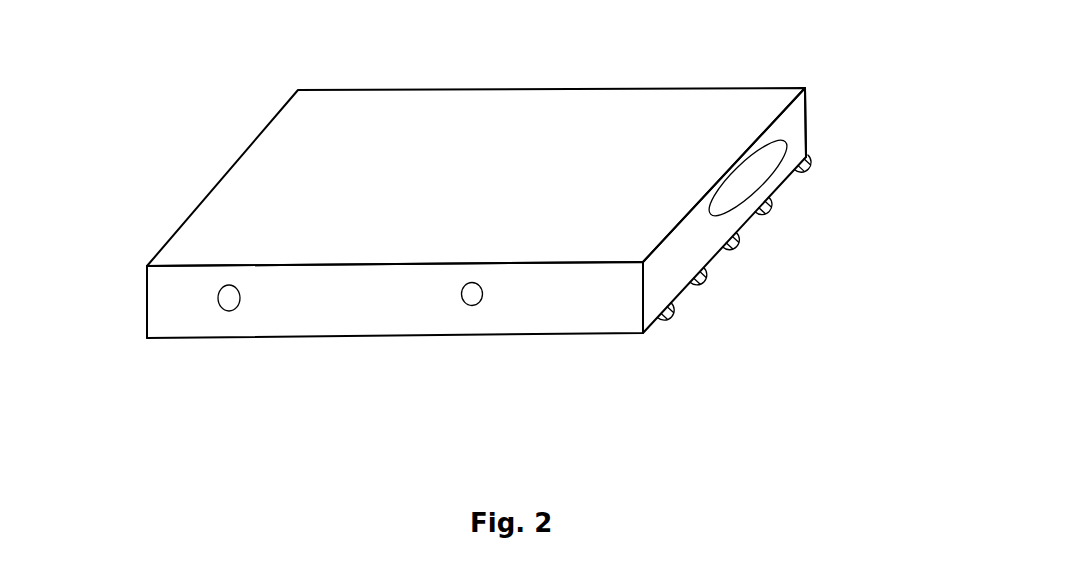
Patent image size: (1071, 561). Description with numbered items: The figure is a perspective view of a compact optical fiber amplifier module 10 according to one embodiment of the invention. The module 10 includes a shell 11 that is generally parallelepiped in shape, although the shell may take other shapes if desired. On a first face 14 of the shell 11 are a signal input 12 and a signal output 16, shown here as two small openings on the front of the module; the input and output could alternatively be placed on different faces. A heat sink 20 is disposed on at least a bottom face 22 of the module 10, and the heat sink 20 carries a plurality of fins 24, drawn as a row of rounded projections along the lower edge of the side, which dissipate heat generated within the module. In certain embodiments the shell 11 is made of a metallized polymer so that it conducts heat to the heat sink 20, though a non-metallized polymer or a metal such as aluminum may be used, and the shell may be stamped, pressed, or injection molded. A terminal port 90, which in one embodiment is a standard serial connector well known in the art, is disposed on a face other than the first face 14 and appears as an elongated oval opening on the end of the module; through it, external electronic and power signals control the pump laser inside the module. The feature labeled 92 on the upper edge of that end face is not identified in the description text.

The optical fiber amplifier module 10 is at (486, 217).
The shell 11 is at (620, 32).
The signal input 12 is at (229, 303).
The first face 14 is at (147, 298).
The signal output 16 is at (472, 300).
The heat sink 20 is at (688, 293).
The bottom face 22 is at (333, 338).
The fins 24 is at (808, 170).
The terminal port 90 is at (775, 153).
The side edge 92 is at (807, 103).